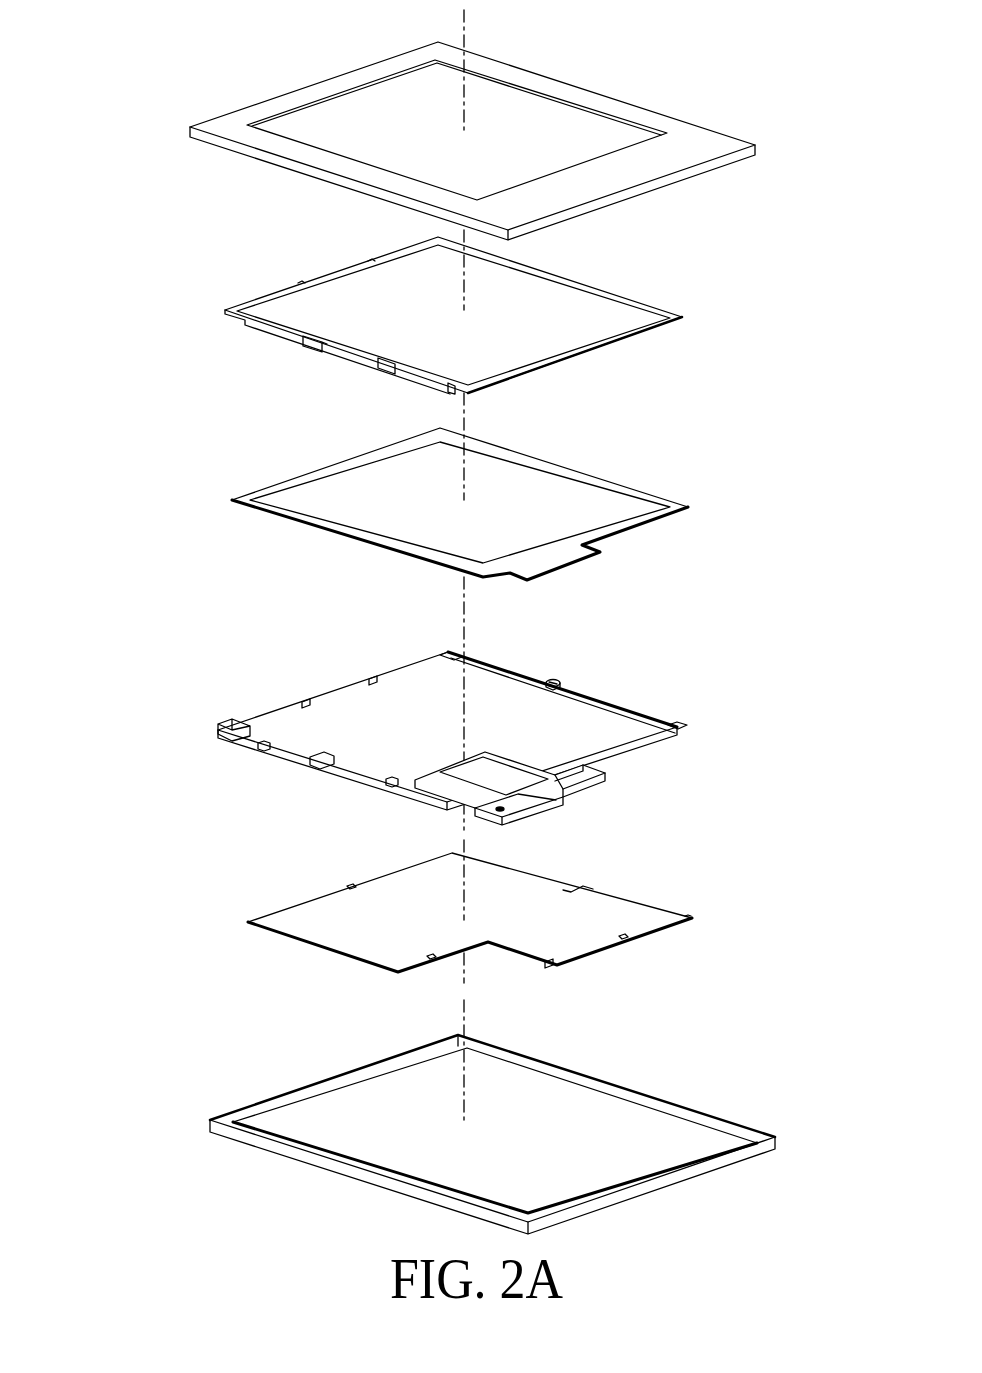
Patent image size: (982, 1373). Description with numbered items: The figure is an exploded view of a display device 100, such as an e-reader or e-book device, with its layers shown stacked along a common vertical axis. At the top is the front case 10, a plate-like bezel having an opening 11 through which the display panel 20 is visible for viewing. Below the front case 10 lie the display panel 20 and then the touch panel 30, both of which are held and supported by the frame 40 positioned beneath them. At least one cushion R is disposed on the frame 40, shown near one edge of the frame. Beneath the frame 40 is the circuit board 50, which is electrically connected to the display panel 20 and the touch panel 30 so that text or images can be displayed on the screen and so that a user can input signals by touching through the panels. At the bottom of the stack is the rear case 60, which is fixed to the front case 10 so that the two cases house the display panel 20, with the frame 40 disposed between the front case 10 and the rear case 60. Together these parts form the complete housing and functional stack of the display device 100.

The display device 100 is at (115, 36).
The front case 10 is at (498, 133).
The opening 11 is at (560, 123).
The display panel 20 is at (625, 318).
The touch panel 30 is at (625, 507).
The frame 40 is at (475, 704).
The cushion R is at (553, 678).
The circuit board 50 is at (627, 915).
The rear case 60 is at (627, 1127).